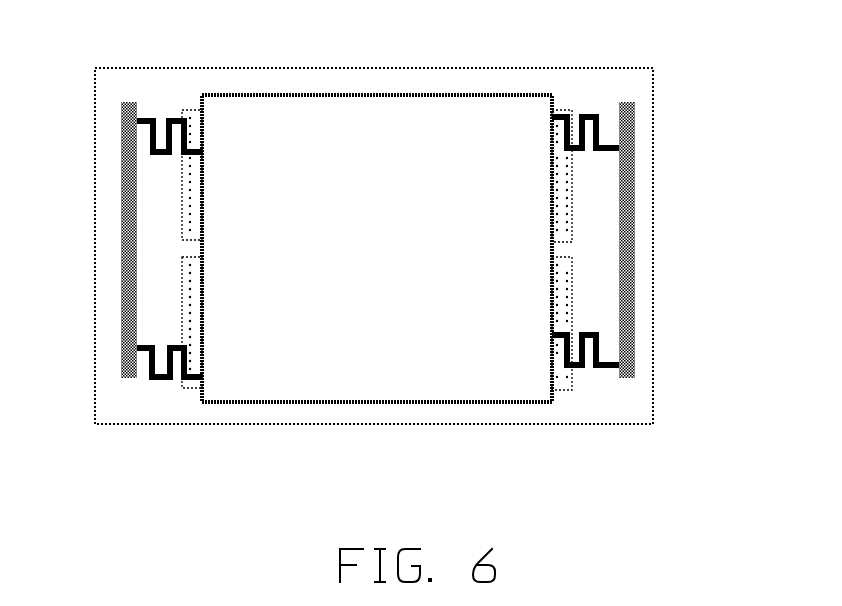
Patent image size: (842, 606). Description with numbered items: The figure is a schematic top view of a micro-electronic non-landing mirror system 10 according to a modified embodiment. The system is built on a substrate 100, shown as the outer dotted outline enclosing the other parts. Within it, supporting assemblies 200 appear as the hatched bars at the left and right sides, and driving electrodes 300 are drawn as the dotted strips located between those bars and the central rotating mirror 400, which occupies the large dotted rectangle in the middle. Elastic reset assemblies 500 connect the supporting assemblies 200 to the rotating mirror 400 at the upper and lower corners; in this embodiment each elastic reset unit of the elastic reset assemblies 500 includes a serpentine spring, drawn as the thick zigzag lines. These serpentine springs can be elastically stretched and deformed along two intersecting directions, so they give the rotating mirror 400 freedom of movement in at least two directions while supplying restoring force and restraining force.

The micro-electronic non-landing mirror system 10 is at (633, 40).
The substrate 100 is at (558, 415).
The supporting assemblies 200 is at (127, 243).
The driving electrodes 300 is at (570, 213).
The rotating mirror 400 is at (425, 345).
The elastic reset assemblies 500 is at (600, 152).